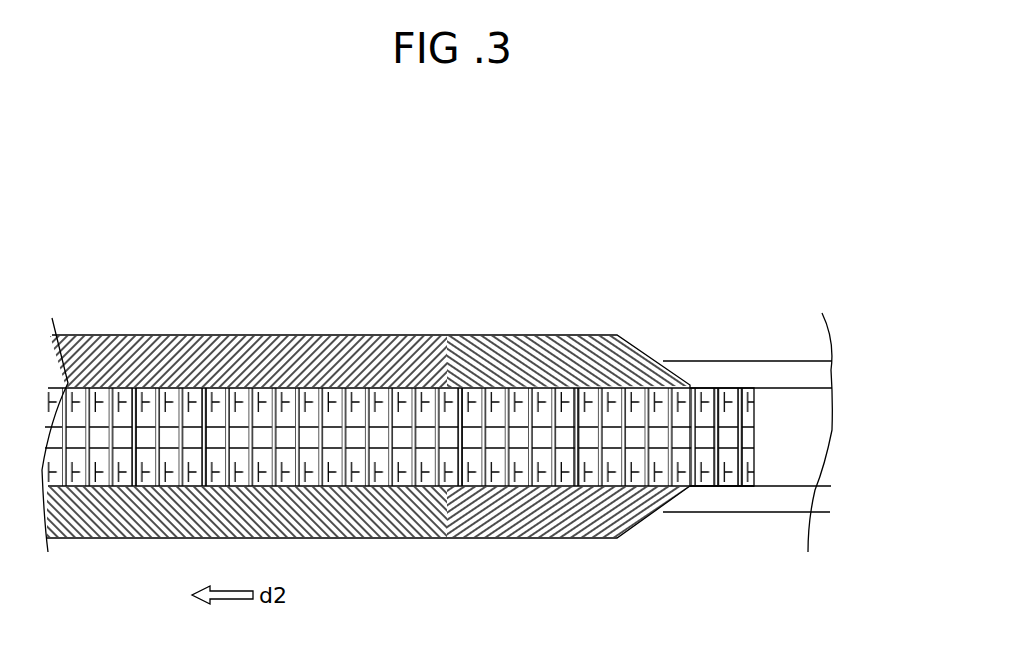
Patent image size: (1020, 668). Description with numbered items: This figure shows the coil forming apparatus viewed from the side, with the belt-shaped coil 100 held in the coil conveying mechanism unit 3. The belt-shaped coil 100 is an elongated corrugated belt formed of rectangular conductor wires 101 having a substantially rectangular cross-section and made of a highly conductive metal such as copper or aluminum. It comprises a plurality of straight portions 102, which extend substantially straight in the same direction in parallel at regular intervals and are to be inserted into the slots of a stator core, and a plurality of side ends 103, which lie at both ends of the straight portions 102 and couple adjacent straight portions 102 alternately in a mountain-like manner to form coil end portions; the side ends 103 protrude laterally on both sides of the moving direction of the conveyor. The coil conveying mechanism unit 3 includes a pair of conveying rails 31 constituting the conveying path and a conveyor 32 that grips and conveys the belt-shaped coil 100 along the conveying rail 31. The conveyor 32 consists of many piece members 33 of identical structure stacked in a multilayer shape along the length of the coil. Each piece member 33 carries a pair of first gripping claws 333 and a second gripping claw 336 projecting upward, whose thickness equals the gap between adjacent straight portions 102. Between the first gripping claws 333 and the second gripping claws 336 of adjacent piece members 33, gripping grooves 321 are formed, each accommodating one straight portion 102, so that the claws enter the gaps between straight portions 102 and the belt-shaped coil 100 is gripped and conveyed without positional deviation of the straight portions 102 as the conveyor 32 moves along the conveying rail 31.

The coil conveying mechanism unit 3 is at (860, 318).
The belt-shaped coil 100 is at (396, 285).
The rectangular conductor wire 101 is at (618, 335).
The straight portion 102 is at (440, 415).
The side end 103 is at (292, 335).
The first gripping claw 333 is at (125, 400).
The second gripping claw 336 is at (205, 420).
The conveying rail 31 is at (787, 361).
The conveyor 32 is at (782, 433).
The gripping groove 321 is at (733, 388).
The piece member 33 is at (740, 486).